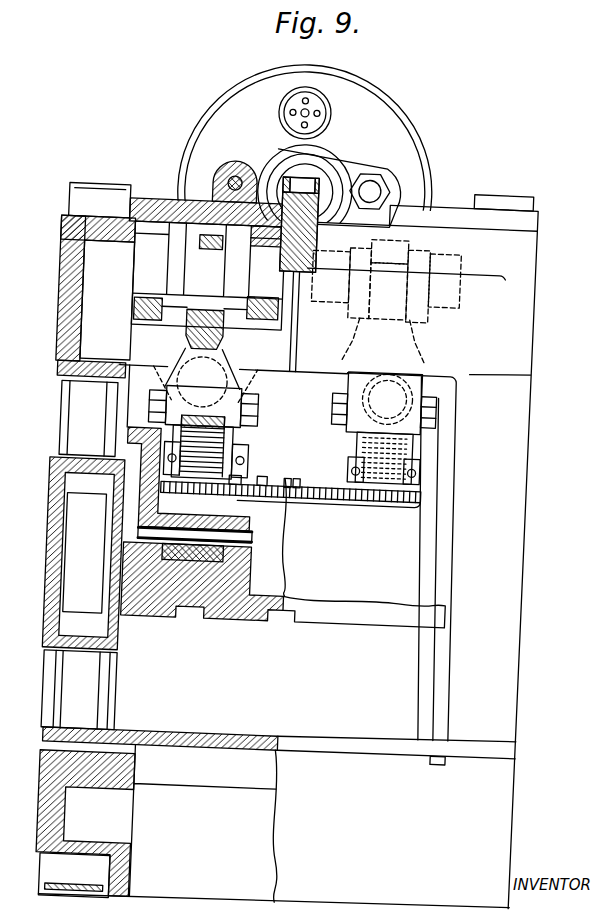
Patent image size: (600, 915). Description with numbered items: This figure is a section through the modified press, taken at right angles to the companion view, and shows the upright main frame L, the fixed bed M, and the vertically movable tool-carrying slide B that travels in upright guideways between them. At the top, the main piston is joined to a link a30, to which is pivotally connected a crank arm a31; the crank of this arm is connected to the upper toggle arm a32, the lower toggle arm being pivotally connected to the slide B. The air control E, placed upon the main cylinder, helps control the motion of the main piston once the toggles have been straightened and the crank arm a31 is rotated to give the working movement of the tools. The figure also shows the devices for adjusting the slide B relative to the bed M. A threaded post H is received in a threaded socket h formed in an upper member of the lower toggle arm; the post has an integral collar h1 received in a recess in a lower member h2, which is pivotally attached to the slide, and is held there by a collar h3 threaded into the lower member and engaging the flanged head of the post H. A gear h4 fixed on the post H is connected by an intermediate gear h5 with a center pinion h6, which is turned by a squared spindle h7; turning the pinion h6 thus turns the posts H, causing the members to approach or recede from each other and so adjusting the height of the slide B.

The air control E is at (262, 108).
The link a30 is at (302, 190).
The crank arm a31 is at (277, 351).
The toggle arm a32 is at (273, 304).
The threaded socket h is at (230, 442).
The integral collar h1 is at (250, 526).
The lower member h2 is at (233, 561).
The collar h3 is at (138, 509).
The gear h4 is at (225, 481).
The intermediate gear h5 is at (258, 476).
The center pinion h6 is at (296, 480).
The squared spindle h7 is at (292, 462).
The threaded post H is at (219, 447).
The slide B is at (139, 626).
The main frame L is at (287, 531).
The bed M is at (274, 820).